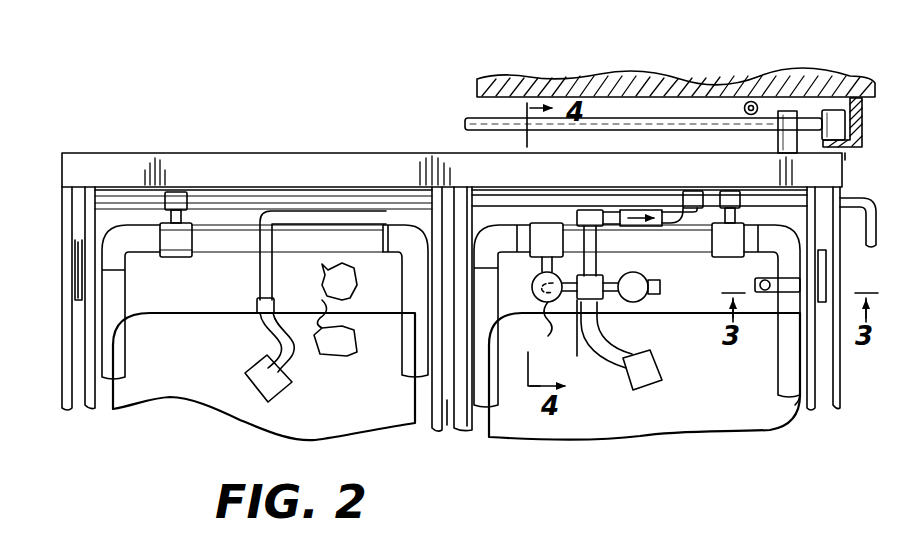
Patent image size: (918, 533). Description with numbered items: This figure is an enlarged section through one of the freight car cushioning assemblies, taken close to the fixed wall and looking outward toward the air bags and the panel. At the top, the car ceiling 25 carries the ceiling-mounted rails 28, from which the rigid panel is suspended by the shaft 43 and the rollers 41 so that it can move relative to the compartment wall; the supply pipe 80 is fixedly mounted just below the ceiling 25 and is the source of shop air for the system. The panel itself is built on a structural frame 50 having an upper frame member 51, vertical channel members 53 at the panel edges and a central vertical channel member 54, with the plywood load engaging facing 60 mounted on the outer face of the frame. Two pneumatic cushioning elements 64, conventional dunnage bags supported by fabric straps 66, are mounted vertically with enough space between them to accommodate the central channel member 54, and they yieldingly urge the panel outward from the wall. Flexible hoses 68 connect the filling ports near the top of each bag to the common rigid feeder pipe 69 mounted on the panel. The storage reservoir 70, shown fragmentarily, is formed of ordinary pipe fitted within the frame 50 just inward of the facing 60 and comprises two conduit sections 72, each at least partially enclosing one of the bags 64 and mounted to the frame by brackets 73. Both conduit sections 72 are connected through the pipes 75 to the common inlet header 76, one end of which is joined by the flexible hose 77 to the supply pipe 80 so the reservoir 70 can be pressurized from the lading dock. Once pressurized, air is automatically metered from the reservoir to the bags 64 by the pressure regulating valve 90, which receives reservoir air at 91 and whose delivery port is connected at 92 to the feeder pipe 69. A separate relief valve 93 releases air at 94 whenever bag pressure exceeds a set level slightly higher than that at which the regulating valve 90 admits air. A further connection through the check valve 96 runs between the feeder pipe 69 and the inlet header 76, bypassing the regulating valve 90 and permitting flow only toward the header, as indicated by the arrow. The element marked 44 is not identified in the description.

The ceiling 25 is at (634, 96).
The shaft 43 is at (693, 118).
The supply pipe 80 is at (757, 104).
The rollers 41 is at (838, 110).
The ceiling-mounted rails 28 is at (866, 126).
The structural frame 50 is at (850, 170).
The upper frame member 51 is at (272, 152).
The pipes 75 is at (176, 214).
The feeder pipe 69 is at (358, 212).
The inlet header 76 is at (573, 191).
The check valve 96 is at (652, 208).
The flexible hose 77 is at (876, 230).
The vertical channel members 53 is at (62, 304).
The load engaging facing 60 is at (192, 296).
The conduit sections 72 is at (228, 238).
The fabric straps 66 is at (322, 279).
The reservoir air inlet of pressure regulating valve 91 is at (532, 287).
The relief valve 93 is at (650, 281).
The relief valve release outlet 94 is at (660, 297).
The latch panel 44 is at (826, 281).
The flexible hoses 68 is at (258, 318).
The pneumatic cushioning elements 64 is at (205, 380).
The pressure regulating valve 90 is at (559, 330).
The delivery port connection of pressure regulating valve 92 is at (570, 341).
The brackets 73 is at (778, 295).
The storage reservoir 70 is at (802, 402).
The central vertical channel member 54 is at (434, 425).